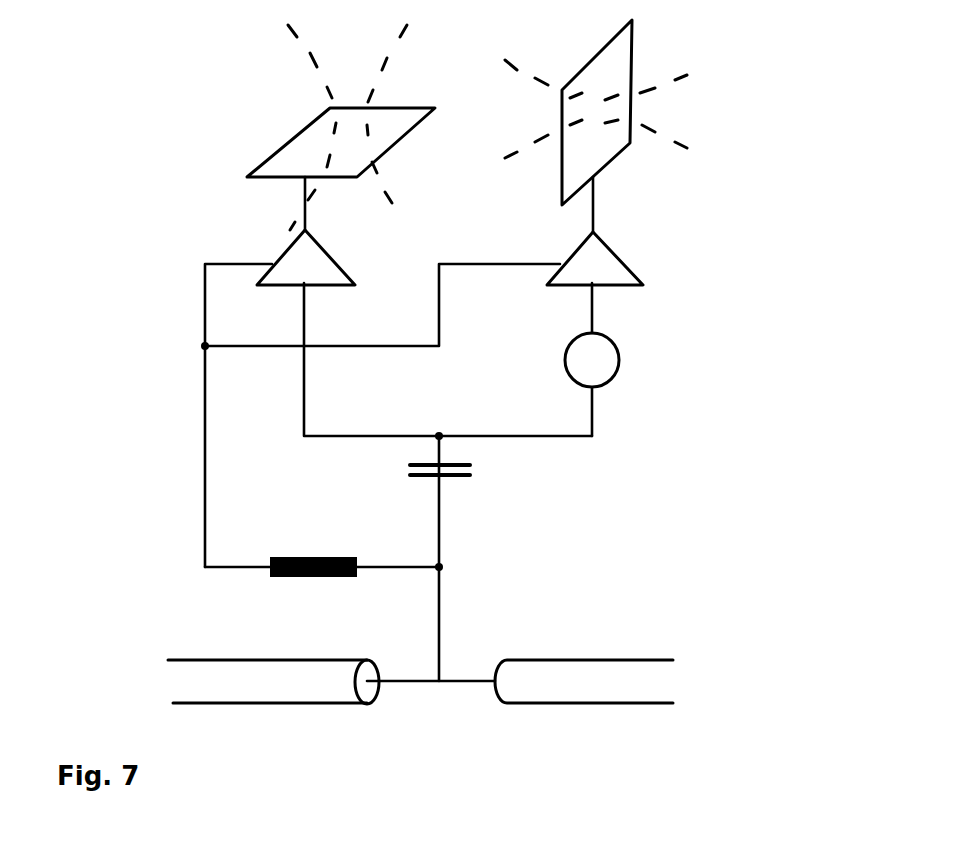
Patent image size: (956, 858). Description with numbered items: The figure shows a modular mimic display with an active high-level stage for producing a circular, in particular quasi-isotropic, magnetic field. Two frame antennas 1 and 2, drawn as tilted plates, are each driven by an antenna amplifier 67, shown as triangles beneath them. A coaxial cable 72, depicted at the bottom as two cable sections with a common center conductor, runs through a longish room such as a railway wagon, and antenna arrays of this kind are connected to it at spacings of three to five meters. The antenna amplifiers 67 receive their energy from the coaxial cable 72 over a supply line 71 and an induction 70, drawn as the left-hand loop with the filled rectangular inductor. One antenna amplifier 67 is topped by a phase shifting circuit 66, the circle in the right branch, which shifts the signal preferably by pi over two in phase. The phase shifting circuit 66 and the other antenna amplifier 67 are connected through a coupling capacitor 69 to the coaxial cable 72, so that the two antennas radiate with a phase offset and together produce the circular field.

The frame antenna 1 is at (633, 72).
The frame antenna 2 is at (397, 108).
The phase shifting circuit 66 is at (592, 360).
The antenna amplifier 67 is at (450, 257).
The coupling capacitor 69 is at (480, 468).
The induction 70 is at (327, 547).
The supply line 71 is at (200, 453).
The coaxial cable 72 is at (562, 658).